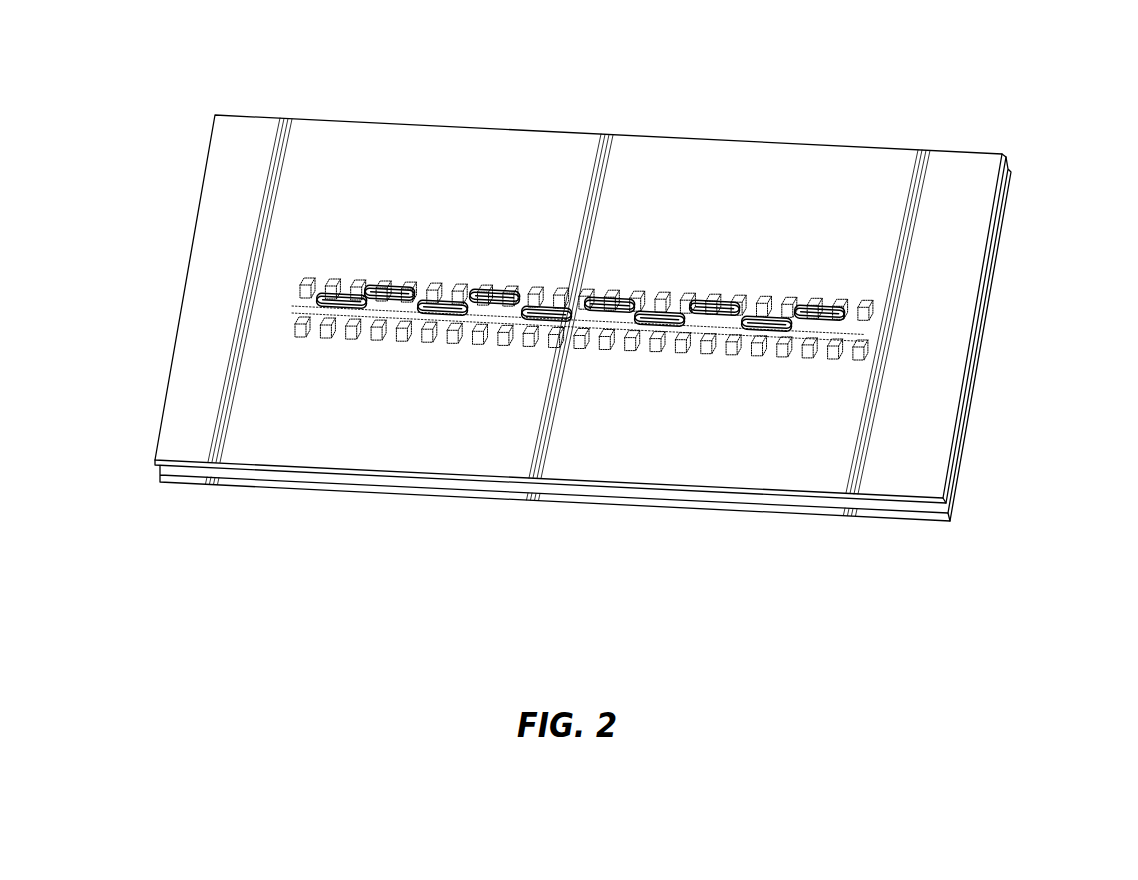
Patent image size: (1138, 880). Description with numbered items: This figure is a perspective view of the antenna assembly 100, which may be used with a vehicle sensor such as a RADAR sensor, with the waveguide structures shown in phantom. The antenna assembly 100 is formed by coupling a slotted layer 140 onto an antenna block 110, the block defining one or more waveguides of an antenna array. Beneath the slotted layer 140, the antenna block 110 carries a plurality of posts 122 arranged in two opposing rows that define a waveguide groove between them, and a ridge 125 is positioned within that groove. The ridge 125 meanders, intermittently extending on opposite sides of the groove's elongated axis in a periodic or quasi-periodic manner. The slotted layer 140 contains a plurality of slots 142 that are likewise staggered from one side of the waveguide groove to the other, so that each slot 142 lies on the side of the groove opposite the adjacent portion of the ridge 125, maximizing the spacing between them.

The antenna assembly 100 is at (644, 293).
The antenna block 110 is at (1007, 210).
The posts 122 is at (860, 357).
The ridge 125 is at (805, 330).
The slotted layer 140 is at (887, 155).
The slots 142 is at (727, 299).